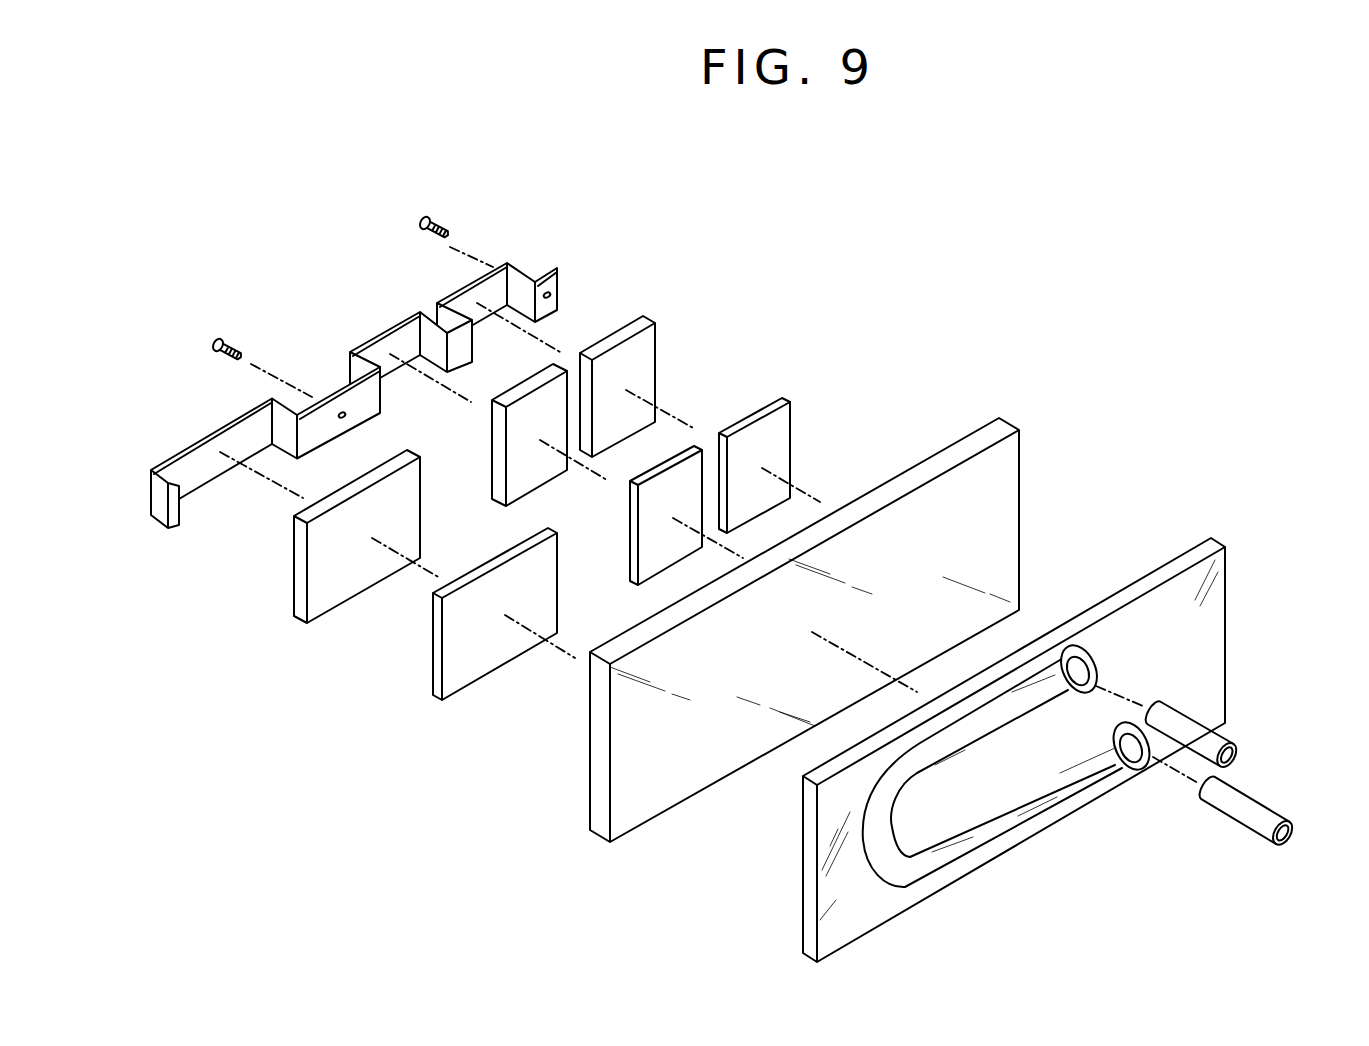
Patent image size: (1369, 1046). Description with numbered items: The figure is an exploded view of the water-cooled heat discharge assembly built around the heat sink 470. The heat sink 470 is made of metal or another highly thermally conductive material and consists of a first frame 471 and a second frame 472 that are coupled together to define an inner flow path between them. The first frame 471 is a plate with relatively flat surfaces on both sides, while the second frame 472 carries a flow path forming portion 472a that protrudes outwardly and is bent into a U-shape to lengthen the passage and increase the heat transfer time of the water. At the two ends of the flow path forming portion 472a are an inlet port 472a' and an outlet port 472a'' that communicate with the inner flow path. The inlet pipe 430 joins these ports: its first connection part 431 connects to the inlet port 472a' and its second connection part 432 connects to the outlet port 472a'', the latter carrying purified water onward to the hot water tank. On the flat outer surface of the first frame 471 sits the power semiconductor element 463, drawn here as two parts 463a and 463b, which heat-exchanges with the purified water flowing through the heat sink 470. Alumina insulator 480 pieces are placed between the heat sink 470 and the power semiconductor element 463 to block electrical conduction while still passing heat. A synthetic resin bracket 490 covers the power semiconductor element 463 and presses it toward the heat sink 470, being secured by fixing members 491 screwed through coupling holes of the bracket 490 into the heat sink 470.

The inlet pipe 430 is at (1242, 694).
The first connection part 431 is at (1215, 740).
The second connection part 432 is at (1253, 813).
The power semiconductor element 463 is at (685, 234).
The first insulating plate 463a is at (538, 410).
The second insulating plate 463b is at (617, 367).
The heat sink 470 is at (1085, 369).
The first frame 471 is at (1000, 426).
The second frame 472 is at (1058, 664).
The flow path forming portion 472a is at (992, 793).
The inlet port 472a' is at (1183, 643).
The outlet port 472a'' is at (1147, 787).
The insulator 480 is at (546, 533).
The bracket 490 is at (387, 347).
The fixing member 491 is at (225, 338).